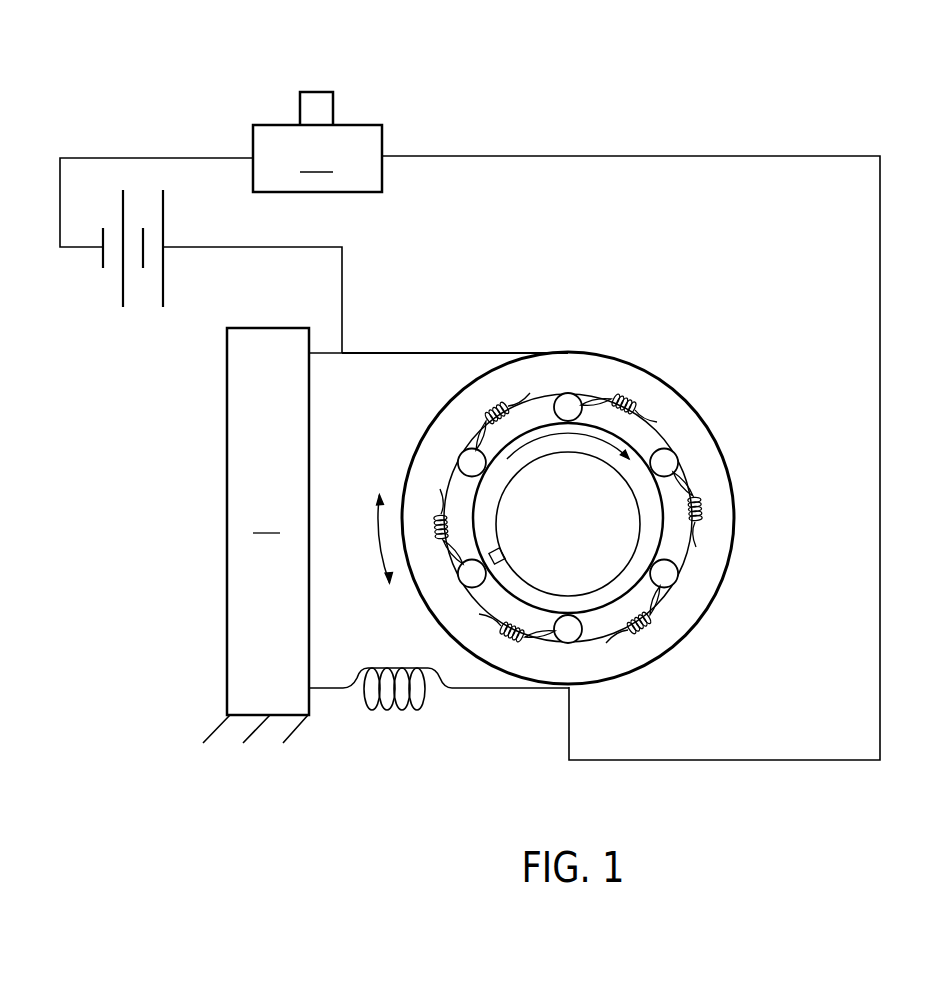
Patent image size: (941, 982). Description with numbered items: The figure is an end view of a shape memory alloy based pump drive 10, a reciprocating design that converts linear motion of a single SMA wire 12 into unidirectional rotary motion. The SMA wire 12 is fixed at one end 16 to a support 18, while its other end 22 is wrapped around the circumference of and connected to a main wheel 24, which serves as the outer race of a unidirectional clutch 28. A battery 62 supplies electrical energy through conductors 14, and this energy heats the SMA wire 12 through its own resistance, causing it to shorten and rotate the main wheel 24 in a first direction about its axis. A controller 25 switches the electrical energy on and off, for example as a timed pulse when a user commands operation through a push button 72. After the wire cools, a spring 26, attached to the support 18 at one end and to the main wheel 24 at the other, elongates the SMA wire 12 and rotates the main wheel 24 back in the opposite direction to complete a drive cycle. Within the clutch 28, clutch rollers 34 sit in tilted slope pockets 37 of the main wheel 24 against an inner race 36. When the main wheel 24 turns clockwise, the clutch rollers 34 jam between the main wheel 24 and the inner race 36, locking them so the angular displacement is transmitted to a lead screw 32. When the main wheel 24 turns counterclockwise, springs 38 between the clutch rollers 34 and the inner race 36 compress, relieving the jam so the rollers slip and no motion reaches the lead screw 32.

The SMA based pump drive 10 is at (830, 93).
The shape memory alloy wire 12 is at (368, 353).
The conductors 14 is at (219, 247).
The one end 16 is at (292, 352).
The support 18 is at (256, 535).
The other end 22 is at (557, 699).
The main wheel 24 is at (657, 647).
The controller 25 is at (317, 158).
The spring 26 is at (388, 711).
The unidirectional clutch 28 is at (407, 606).
The lead screw 32 is at (600, 570).
The clutch rollers 34 is at (667, 573).
The inner race 36 is at (490, 486).
The tilted slope pockets 37 is at (590, 402).
The springs 38 is at (492, 402).
The battery 62 is at (121, 283).
The push button 72 is at (318, 98).